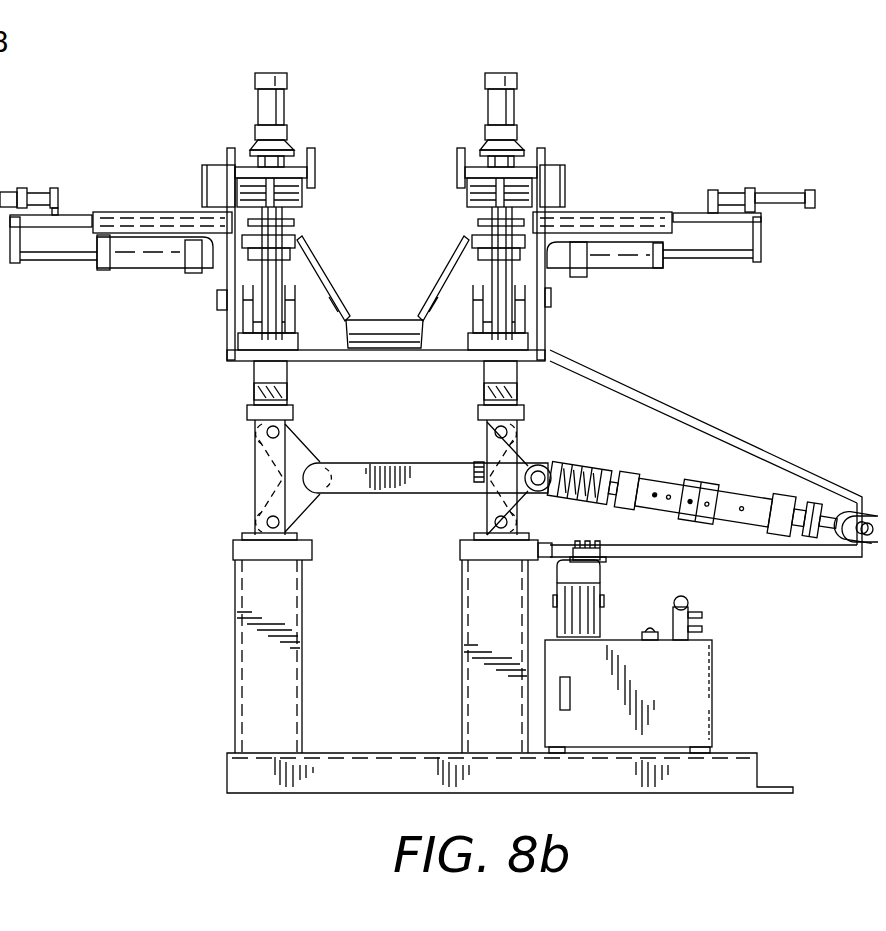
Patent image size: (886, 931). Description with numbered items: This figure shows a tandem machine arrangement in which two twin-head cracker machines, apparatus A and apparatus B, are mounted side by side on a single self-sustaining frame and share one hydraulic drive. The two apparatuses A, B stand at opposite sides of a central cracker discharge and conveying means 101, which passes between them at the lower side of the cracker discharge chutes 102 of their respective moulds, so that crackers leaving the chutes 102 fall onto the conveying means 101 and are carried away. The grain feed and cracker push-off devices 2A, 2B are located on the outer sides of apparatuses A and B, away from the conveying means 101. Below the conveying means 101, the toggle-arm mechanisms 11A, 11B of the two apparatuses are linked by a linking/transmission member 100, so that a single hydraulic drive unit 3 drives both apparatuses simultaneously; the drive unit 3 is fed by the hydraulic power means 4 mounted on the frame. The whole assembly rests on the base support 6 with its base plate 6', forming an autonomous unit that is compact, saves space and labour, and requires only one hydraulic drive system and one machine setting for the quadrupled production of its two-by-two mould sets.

The apparatus A is at (295, 108).
The apparatus B is at (473, 99).
The grain feed and cracker push-off device 2A is at (146, 206).
The grain feed and cracker push-off device 2B is at (609, 207).
The cracker discharge chutes 102 is at (447, 256).
The central cracker discharge and conveying means 101 is at (382, 317).
The toggle-arm mechanism 11A is at (298, 447).
The toggle-arm mechanism 11B is at (520, 450).
The linking/transmission member 100 is at (368, 467).
The hydraulic drive unit 3 is at (709, 478).
The base support 6 is at (392, 646).
The base plate 6' is at (510, 798).
The hydraulic power means 4 is at (712, 697).